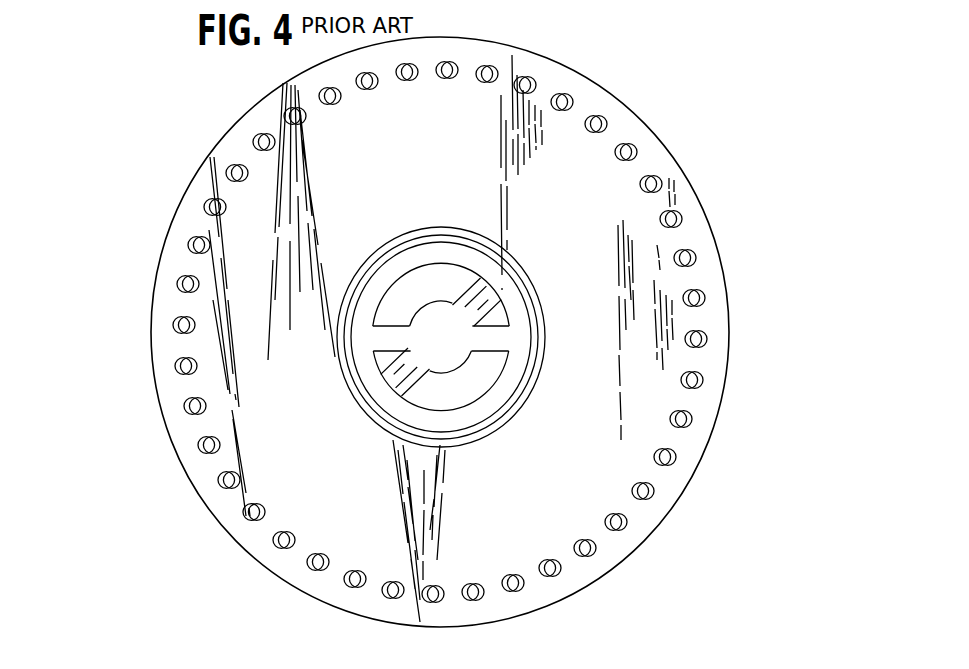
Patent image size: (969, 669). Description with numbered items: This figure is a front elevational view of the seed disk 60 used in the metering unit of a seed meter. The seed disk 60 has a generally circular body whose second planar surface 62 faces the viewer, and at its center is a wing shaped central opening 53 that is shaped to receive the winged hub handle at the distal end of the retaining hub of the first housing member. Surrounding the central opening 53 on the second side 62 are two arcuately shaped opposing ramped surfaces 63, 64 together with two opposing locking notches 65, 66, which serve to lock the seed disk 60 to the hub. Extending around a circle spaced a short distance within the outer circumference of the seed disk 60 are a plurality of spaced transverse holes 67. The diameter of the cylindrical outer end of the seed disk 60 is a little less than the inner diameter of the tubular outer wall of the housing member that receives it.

The seed disk 60 is at (156, 228).
The transverse holes 67 is at (176, 330).
The second planar surface 62 is at (240, 410).
The ramped surface 64 is at (485, 386).
The ramped surface 63 is at (450, 275).
The central opening 53 is at (410, 352).
The locking notch 66 is at (490, 293).
The locking notch 65 is at (390, 393).